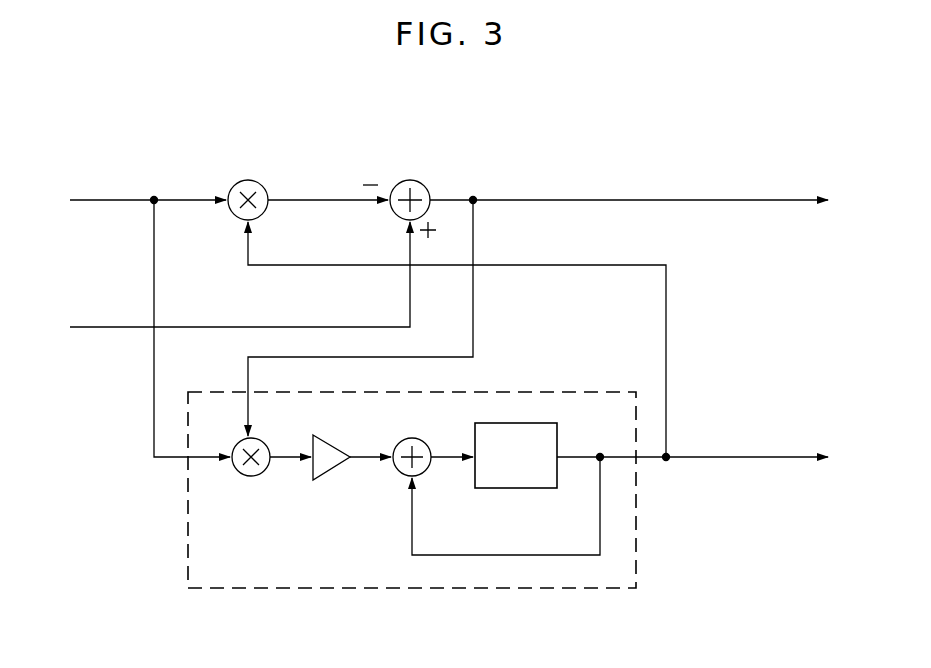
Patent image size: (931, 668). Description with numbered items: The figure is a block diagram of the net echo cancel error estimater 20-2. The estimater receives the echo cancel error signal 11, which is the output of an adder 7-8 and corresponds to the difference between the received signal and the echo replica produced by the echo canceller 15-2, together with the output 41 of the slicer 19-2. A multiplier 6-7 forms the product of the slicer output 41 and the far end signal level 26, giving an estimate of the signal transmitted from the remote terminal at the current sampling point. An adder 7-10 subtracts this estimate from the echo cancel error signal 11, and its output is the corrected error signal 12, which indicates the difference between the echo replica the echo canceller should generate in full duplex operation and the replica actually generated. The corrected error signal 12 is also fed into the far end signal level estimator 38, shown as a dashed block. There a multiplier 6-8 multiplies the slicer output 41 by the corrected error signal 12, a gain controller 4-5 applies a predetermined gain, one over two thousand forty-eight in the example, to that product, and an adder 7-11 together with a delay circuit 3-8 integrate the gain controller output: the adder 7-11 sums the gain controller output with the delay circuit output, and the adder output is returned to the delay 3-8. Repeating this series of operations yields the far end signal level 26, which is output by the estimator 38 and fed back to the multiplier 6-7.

The slicer output 41 is at (110, 200).
The multiplier 6-7 is at (248, 180).
The adder 7-10 is at (410, 180).
The error signal 12 is at (728, 200).
The echo canceller 15-2 is at (858, 201).
The net echo cancel error estimater 20-2 is at (672, 101).
The echo cancel error signal 11 is at (106, 327).
The adder 7-8 is at (34, 329).
The multiplier 6-8 is at (250, 477).
The gain controller 4-5 is at (330, 479).
The adder 7-11 is at (408, 438).
The delay circuit 3-8 is at (515, 489).
The far end signal level 26 is at (728, 457).
The slicer 19-2 is at (859, 456).
The far end signal level estimator 38 is at (250, 589).